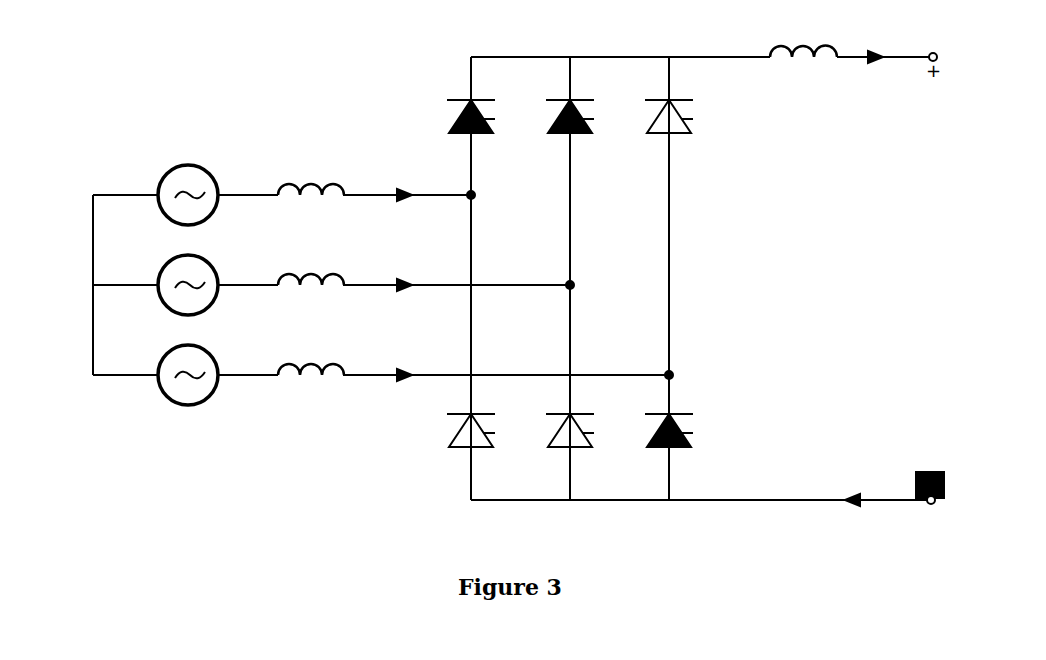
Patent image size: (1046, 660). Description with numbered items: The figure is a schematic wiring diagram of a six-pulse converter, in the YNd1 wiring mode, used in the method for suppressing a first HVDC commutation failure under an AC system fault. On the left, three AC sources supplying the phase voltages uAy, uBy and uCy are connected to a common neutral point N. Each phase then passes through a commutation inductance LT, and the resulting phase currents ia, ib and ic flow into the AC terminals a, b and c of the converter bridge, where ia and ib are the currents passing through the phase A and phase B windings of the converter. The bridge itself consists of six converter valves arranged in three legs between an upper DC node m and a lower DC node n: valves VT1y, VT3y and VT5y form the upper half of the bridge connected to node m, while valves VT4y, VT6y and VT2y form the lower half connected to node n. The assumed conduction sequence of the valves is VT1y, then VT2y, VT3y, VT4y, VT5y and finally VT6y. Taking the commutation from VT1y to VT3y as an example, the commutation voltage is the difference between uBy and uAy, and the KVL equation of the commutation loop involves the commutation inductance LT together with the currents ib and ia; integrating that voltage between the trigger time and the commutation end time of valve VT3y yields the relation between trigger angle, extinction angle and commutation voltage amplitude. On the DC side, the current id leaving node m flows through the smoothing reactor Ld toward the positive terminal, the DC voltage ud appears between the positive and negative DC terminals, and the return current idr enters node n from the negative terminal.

The neutral point of the three-phase AC source N is at (111, 285).
The phase A voltage uAy is at (178, 183).
The phase B voltage uBy is at (178, 274).
The phase C source voltage uCy is at (178, 366).
The commutation inductance LT is at (311, 263).
The phase A current ia is at (407, 181).
The phase B current ib is at (456, 271).
The phase C current ic is at (506, 362).
The AC node a is at (481, 195).
The AC node b is at (581, 284).
The AC node c is at (681, 375).
The positive DC node m is at (570, 45).
The negative DC node n is at (570, 509).
The converter valve VT1y is at (487, 135).
The converter valve VT3y is at (586, 135).
The converter valve VT5y is at (687, 135).
The converter valve VT4y is at (484, 447).
The converter valve VT6y is at (584, 447).
The converter valve VT2y is at (683, 447).
The DC smoothing reactor Ld is at (803, 71).
The DC current id is at (887, 45).
The DC return current idr is at (894, 485).
The DC voltage ud is at (933, 259).